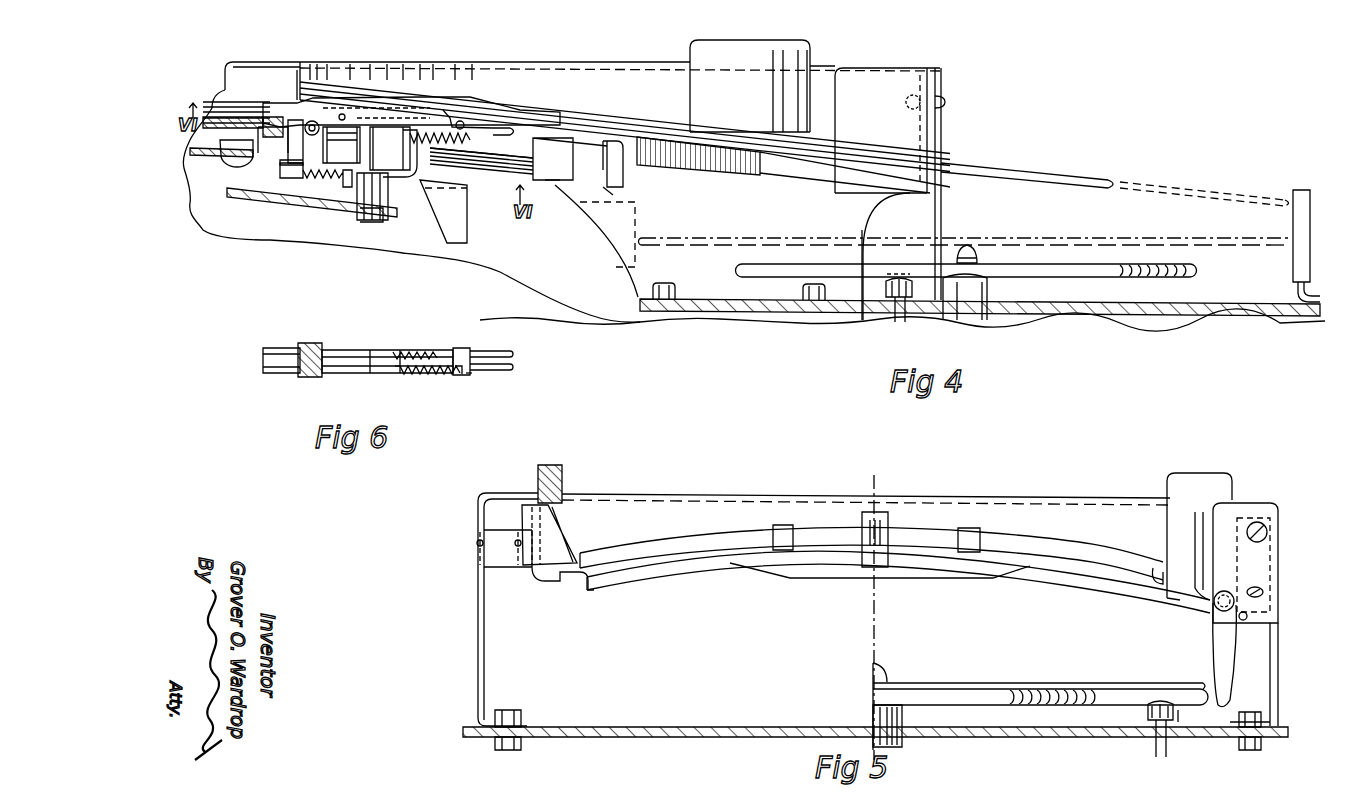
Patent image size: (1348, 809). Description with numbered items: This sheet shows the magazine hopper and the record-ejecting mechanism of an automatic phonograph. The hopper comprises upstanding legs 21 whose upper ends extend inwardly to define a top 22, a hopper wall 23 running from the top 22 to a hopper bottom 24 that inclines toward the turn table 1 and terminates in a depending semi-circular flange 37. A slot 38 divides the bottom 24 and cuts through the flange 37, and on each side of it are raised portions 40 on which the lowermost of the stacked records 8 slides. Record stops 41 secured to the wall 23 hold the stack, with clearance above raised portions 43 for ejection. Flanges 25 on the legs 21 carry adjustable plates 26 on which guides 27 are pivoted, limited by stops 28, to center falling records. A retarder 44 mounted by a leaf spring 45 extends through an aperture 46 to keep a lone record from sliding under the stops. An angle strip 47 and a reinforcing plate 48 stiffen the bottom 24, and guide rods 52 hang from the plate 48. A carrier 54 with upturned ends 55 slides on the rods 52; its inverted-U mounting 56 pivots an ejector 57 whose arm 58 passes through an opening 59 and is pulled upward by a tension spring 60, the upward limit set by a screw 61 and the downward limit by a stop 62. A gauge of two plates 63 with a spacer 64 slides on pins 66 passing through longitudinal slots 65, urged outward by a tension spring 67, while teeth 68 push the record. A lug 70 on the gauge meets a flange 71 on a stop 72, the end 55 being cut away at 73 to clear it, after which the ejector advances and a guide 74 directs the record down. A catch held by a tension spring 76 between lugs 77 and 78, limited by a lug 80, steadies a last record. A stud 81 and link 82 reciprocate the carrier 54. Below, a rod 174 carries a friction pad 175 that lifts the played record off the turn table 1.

In FIG. 4, the turn table 1 is at (1160, 268).
In FIG. 4, the records 8 is at (318, 100).
In FIG. 5, the legs 21 is at (478, 660).
In FIG. 5, the top 22 is at (503, 493).
In FIG. 5, the hopper wall 23 is at (618, 513).
In FIG. 5, the hopper bottom 24 is at (673, 552).
In FIG. 5, the flanges 25 is at (1275, 540).
In FIG. 5, the plates 26 is at (1270, 561).
In FIG. 4, the guides 27 is at (945, 215).
In FIG. 5, the guides 27 is at (1225, 652).
In FIG. 5, the stops 28 is at (1247, 615).
In FIG. 5, the depending semi-circular flange 37 is at (740, 560).
In FIG. 5, the slot 38 is at (867, 518).
In FIG. 5, the raised portions 40 is at (968, 535).
In FIG. 5, the record stops 41 is at (1217, 490).
In FIG. 5, the raised portions 43 is at (1160, 585).
In FIG. 5, the retarder 44 is at (557, 568).
In FIG. 5, the leaf spring 45 is at (502, 555).
In FIG. 5, the aperture 46 is at (528, 572).
In FIG. 4, the angle strip 47 is at (620, 190).
In FIG. 5, the angle strip 47 is at (840, 572).
In FIG. 4, the reinforcing plate 48 is at (225, 87).
In FIG. 4, the guide rods 52 is at (607, 195).
In FIG. 4, the carrier 54 is at (207, 157).
In FIG. 4, the upturned ends 55 is at (468, 196).
In FIG. 4, the mounting 56 is at (280, 150).
In FIG. 4, the ejector 57 is at (382, 100).
In FIG. 6, the ejector 57 is at (285, 372).
In FIG. 4, the arm 58 is at (302, 153).
In FIG. 4, the opening 59 is at (256, 168).
In FIG. 4, the tension spring 60 is at (340, 178).
In FIG. 4, the screw 61 is at (262, 122).
In FIG. 4, the stop 62 is at (367, 155).
In FIG. 6, the plates 63 is at (513, 367).
In FIG. 6, the spacer 64 is at (352, 362).
In FIG. 4, the longitudinal slots 65 is at (432, 100).
In FIG. 4, the pins 66 is at (463, 122).
In FIG. 4, the tension spring 67 is at (553, 160).
In FIG. 6, the tension spring 67 is at (418, 352).
In FIG. 4, the teeth 68 is at (450, 108).
In FIG. 6, the teeth 68 is at (468, 352).
In FIG. 4, the lug 70 is at (370, 156).
In FIG. 4, the flange 71 is at (556, 185).
In FIG. 4, the stop 72 is at (572, 140).
In FIG. 4, the cut away 73 is at (455, 172).
In FIG. 4, the guide 74 is at (455, 235).
In FIG. 6, the tension spring 76 is at (438, 376).
In FIG. 6, the lug 77 is at (403, 375).
In FIG. 6, the lug 78 is at (468, 374).
In FIG. 6, the lug 80 is at (458, 376).
In FIG. 4, the stud 81 is at (382, 195).
In FIG. 4, the link 82 is at (357, 180).
In FIG. 4, the rod 174 is at (897, 320).
In FIG. 5, the rod 174 is at (1157, 728).
In FIG. 4, the friction pad 175 is at (883, 290).
In FIG. 5, the friction pad 175 is at (1178, 712).